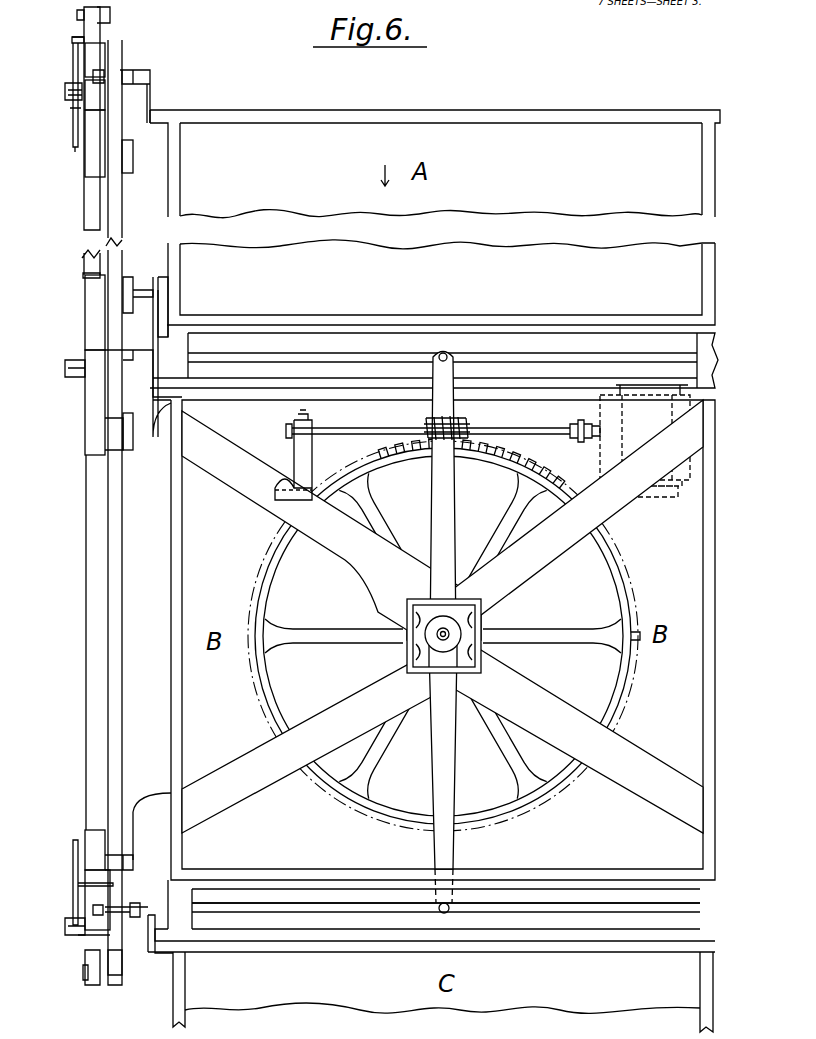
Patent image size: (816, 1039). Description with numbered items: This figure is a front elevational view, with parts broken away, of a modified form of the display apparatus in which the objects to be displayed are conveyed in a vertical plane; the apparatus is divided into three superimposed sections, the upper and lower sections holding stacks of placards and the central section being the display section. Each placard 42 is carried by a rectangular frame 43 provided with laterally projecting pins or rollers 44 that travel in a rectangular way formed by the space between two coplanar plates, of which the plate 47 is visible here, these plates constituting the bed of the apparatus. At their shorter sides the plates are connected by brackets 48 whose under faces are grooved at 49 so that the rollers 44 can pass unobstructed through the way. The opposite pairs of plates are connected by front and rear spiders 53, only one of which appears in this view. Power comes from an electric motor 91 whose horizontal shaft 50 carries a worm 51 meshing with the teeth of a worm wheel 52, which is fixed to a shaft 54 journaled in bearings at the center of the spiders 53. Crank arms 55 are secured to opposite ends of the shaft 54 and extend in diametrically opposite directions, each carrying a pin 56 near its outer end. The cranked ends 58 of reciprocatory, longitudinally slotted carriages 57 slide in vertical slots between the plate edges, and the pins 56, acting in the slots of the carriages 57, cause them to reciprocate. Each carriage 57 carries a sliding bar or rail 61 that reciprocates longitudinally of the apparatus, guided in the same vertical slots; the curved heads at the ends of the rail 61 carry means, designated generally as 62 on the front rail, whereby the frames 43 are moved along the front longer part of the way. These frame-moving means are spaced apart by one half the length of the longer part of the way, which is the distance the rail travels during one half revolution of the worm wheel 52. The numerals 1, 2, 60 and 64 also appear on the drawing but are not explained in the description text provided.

The base 1 is at (560, 1006).
The upright frame plate 2 is at (168, 655).
The placard 42 is at (230, 133).
The rectangular frame 43 is at (452, 112).
The rollers 44 is at (96, 105).
The plate 47 is at (113, 196).
The bracket 48 is at (97, 53).
The groove 49 is at (100, 77).
The horizontal shaft 50 is at (362, 432).
The worm 51 is at (470, 424).
The worm wheel 52 is at (528, 458).
The spider 53 is at (252, 490).
The shaft 54 is at (449, 634).
The crank arm 55 is at (445, 512).
The pin 56 is at (446, 352).
The carriage 57 is at (345, 908).
The cranked end 58 is at (100, 305).
The guide block 60 is at (96, 157).
The sliding rail 61 is at (92, 230).
The frame-moving means 62 is at (70, 100).
The rod 64 is at (75, 147).
The electric motor 91 is at (630, 442).